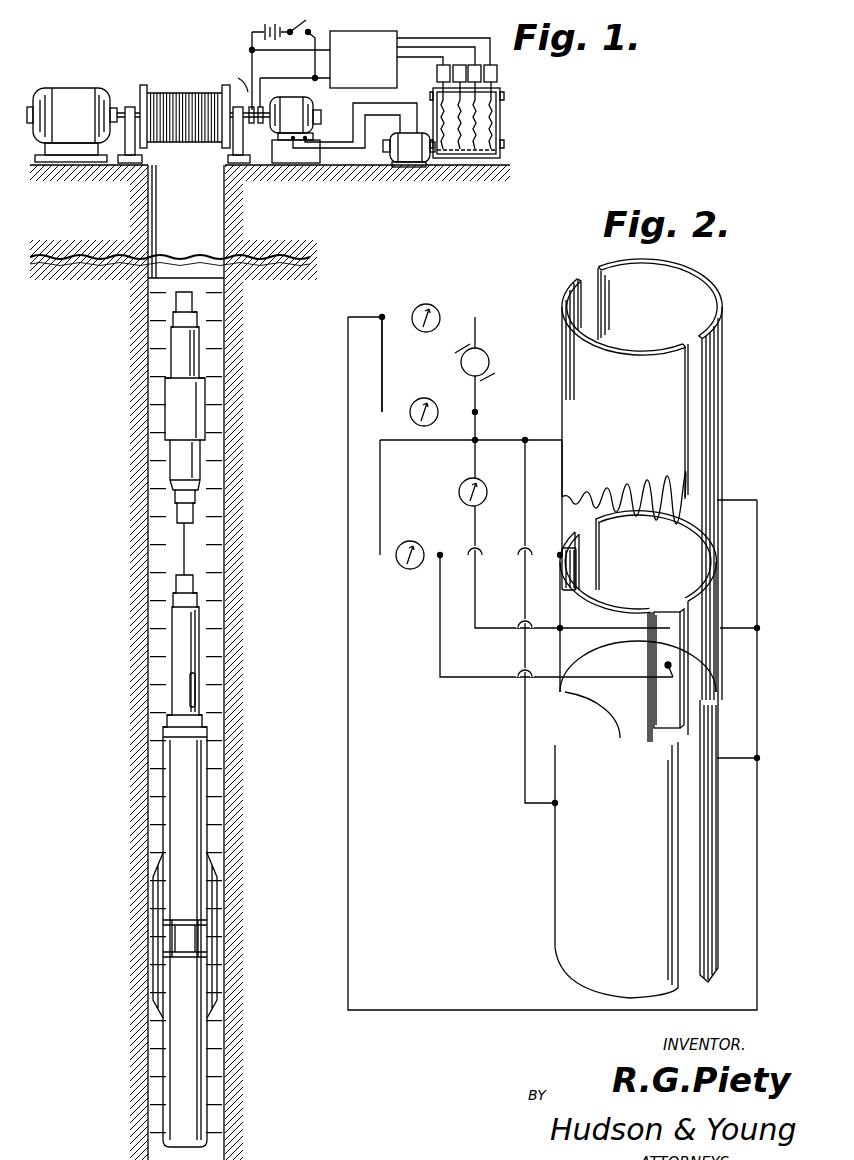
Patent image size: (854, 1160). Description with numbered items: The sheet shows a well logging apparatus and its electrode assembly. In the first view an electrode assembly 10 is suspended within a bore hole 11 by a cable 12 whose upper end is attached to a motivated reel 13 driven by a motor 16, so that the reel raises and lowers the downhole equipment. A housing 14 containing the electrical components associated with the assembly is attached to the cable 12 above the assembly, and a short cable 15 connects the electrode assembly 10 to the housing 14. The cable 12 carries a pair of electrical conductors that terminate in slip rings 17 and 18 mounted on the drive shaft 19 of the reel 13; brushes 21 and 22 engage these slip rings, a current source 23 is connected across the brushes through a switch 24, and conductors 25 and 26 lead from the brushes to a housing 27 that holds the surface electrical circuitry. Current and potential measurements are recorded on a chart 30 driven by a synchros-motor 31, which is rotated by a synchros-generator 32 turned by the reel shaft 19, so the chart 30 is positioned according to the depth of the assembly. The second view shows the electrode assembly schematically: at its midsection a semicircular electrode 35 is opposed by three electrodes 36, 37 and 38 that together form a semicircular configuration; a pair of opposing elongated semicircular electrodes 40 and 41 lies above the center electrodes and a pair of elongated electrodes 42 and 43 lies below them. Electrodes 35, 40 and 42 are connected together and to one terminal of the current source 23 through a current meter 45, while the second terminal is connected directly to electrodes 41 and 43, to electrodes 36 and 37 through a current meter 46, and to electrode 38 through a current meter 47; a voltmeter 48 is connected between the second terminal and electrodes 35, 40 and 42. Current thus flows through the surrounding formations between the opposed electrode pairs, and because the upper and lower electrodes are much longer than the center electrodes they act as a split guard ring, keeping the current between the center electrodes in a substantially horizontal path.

In FIG. 1, the electrode assembly 10 is at (212, 795).
In FIG. 1, the bore hole 11 is at (220, 583).
In FIG. 1, the cable 12 is at (183, 198).
In FIG. 1, the motivated reel 13 is at (177, 77).
In FIG. 1, the housing 14 is at (205, 405).
In FIG. 1, the cable 15 is at (186, 540).
In FIG. 1, the motor 16 is at (74, 77).
In FIG. 1, the slip ring 17 is at (232, 156).
In FIG. 1, the slip ring 18 is at (249, 120).
In FIG. 1, the drive shaft 19 is at (246, 140).
In FIG. 1, the brush 21 is at (248, 76).
In FIG. 1, the brush 22 is at (266, 109).
In FIG. 1, the current source 23 is at (260, 31).
In FIG. 2, the current source 23 is at (490, 362).
In FIG. 1, the switch 24 is at (300, 24).
In FIG. 1, the conductor 25 is at (249, 50).
In FIG. 1, the conductor 26 is at (299, 78).
In FIG. 1, the housing 27 is at (363, 59).
In FIG. 1, the chart 30 is at (467, 160).
In FIG. 1, the synchros-motor 31 is at (400, 168).
In FIG. 1, the synchros-generator 32 is at (319, 118).
In FIG. 2, the semicircular electrode 35 is at (718, 574).
In FIG. 2, the electrode 36 is at (578, 562).
In FIG. 2, the electrode 37 is at (664, 612).
In FIG. 2, the electrode 38 is at (622, 620).
In FIG. 2, the elongated semicircular electrode 40 is at (713, 306).
In FIG. 2, the elongated semicircular electrode 41 is at (562, 298).
In FIG. 2, the elongated semicircular electrode 42 is at (717, 862).
In FIG. 2, the elongated semicircular electrode 43 is at (555, 876).
In FIG. 1, the current meter 45 is at (497, 73).
In FIG. 2, the current meter 45 is at (438, 310).
In FIG. 1, the current meter 46 is at (458, 65).
In FIG. 2, the current meter 46 is at (401, 570).
In FIG. 1, the current meter 47 is at (480, 65).
In FIG. 2, the current meter 47 is at (459, 492).
In FIG. 1, the voltmeter 48 is at (436, 74).
In FIG. 2, the voltmeter 48 is at (423, 398).